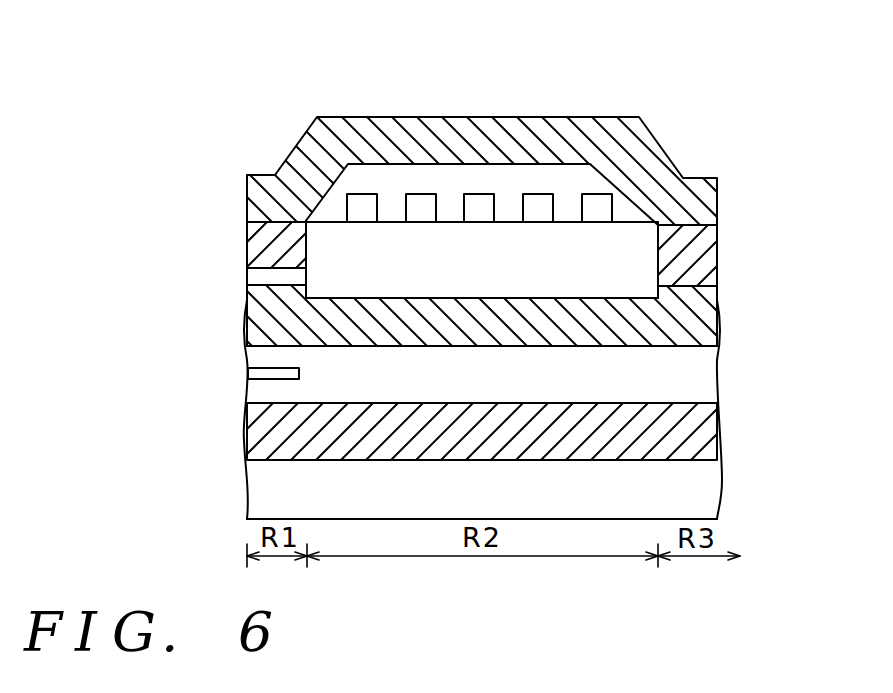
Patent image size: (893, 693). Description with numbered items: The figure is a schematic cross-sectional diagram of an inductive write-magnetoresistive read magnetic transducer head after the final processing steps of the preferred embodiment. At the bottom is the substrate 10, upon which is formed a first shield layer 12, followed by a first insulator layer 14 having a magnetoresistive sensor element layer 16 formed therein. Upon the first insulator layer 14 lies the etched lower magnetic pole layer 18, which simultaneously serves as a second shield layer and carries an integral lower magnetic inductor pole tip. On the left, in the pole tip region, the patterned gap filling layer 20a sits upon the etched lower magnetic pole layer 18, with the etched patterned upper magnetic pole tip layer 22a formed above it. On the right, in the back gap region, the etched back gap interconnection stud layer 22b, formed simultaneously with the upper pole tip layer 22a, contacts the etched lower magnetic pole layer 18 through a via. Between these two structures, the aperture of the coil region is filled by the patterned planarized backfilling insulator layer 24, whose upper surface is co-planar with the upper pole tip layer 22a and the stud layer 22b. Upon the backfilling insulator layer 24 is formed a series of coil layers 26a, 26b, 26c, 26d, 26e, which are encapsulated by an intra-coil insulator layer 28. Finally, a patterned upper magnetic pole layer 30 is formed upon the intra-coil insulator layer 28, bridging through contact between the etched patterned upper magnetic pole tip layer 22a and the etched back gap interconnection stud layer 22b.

The substrate 10 is at (258, 495).
The first shield layer 12 is at (258, 432).
The first insulator layer 14 is at (705, 375).
The magnetoresistive (MR) sensor element layer 16 is at (258, 375).
The etched lower magnetic pole layer 18 is at (258, 318).
The patterned gap filling layer 20a is at (258, 277).
The etched patterned upper magnetic pole tip layer 22a is at (258, 239).
The etched back gap interconnection stud layer 22b is at (703, 243).
The patterned planarized backfilling insulator layer 24 is at (610, 270).
The coil layer 26a is at (360, 205).
The coil layer 26b is at (418, 205).
The coil layer 26c is at (477, 205).
The coil layer 26d is at (534, 205).
The coil layer 26e is at (594, 205).
The intra-coil insulator layer 28 is at (630, 210).
The patterned upper magnetic pole layer 30 is at (258, 203).